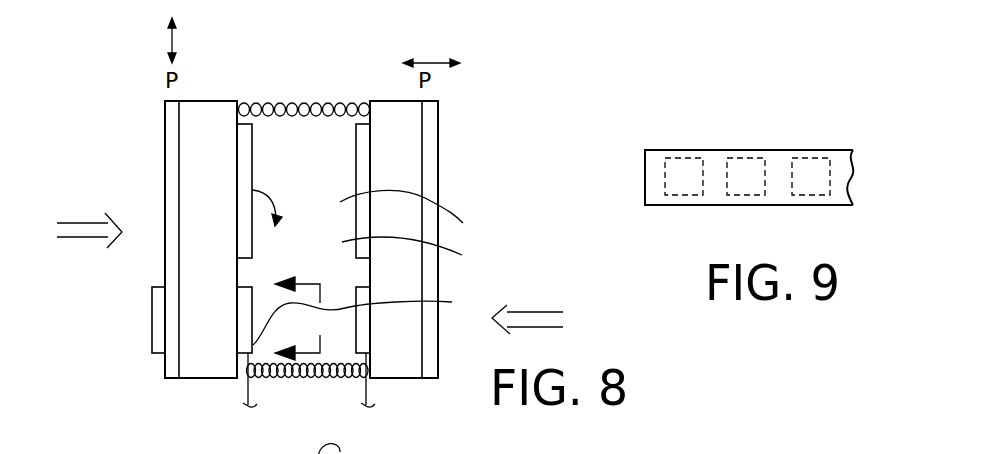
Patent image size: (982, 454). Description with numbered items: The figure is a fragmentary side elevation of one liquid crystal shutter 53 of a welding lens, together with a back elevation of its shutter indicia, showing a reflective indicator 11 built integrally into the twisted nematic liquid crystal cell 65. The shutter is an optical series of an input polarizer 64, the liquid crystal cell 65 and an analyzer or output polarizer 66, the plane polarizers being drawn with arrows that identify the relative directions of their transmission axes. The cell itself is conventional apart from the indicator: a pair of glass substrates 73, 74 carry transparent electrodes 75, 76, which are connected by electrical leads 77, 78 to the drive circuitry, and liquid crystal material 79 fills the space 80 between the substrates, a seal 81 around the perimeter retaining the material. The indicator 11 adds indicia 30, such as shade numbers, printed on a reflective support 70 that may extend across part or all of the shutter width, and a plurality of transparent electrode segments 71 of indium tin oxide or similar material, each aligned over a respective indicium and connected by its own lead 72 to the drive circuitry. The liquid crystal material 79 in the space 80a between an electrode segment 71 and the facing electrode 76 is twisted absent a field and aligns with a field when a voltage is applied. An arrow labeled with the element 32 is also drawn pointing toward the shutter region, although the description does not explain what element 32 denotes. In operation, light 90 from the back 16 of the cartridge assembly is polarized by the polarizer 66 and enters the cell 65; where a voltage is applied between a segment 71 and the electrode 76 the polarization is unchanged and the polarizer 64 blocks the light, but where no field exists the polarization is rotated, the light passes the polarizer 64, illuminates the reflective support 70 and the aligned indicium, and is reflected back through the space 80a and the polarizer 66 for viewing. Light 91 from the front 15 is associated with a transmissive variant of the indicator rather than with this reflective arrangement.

In FIG. 8, the indicator 11 is at (137, 389).
In FIG. 8, the front 15 is at (125, 139).
In FIG. 8, the back 16 is at (492, 277).
In FIG. 8, the indicia 30 is at (190, 345).
In FIG. 9, the indicia 30 is at (695, 133).
In FIG. 8, the module 32 is at (470, 175).
In FIG. 8, the liquid crystal shutter 53 is at (522, 117).
In FIG. 8, the polarizer 64 is at (165, 120).
In FIG. 8, the liquid crystal cell 65 is at (348, 62).
In FIG. 8, the analyzer or output polarizer 66 is at (438, 117).
In FIG. 8, the reflective support 70 is at (152, 338).
In FIG. 9, the reflective support 70 is at (660, 205).
In FIG. 8, the transparent electrode segments 71 is at (312, 300).
In FIG. 9, the transparent electrode segments 71 is at (697, 189).
In FIG. 8, the lead 72 is at (250, 390).
In FIG. 8, the substrate 73 is at (192, 101).
In FIG. 8, the substrate 74 is at (407, 101).
In FIG. 8, the transparent electrode 75 is at (252, 138).
In FIG. 8, the transparent electrode 76 is at (356, 137).
In FIG. 8, the electrical lead 77 is at (282, 204).
In FIG. 8, the electrical lead 78 is at (370, 388).
In FIG. 8, the liquid crystal material 79 is at (416, 215).
In FIG. 8, the space 80 is at (416, 254).
In FIG. 8, the space 80a is at (314, 322).
In FIG. 8, the seal 81 is at (303, 100).
In FIG. 8, the light 90 is at (535, 327).
In FIG. 8, the light 91 is at (73, 240).